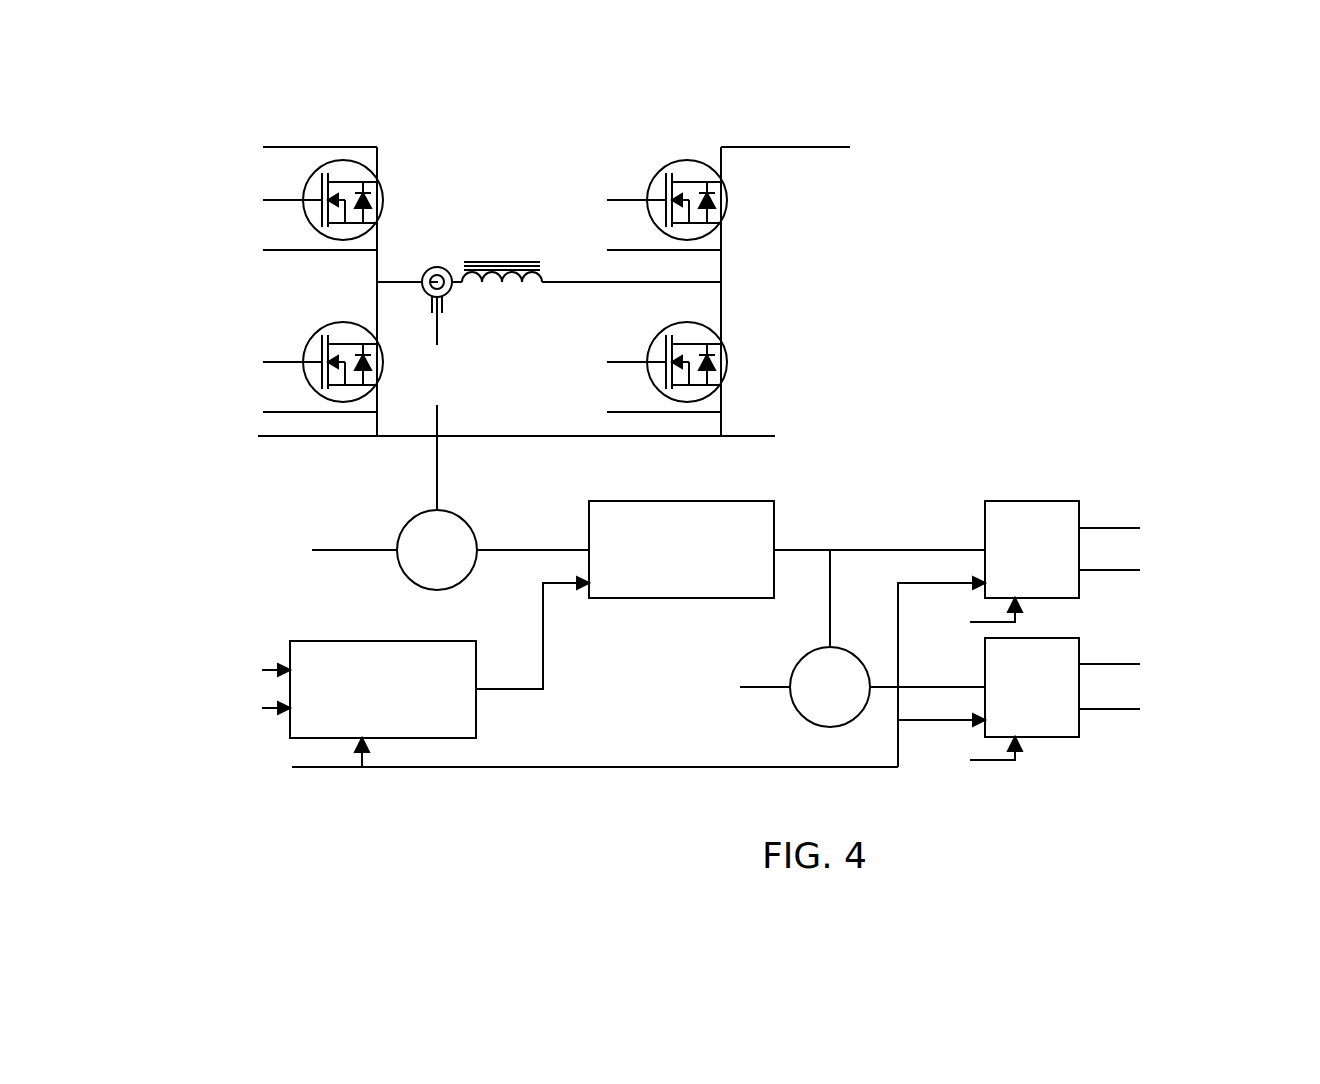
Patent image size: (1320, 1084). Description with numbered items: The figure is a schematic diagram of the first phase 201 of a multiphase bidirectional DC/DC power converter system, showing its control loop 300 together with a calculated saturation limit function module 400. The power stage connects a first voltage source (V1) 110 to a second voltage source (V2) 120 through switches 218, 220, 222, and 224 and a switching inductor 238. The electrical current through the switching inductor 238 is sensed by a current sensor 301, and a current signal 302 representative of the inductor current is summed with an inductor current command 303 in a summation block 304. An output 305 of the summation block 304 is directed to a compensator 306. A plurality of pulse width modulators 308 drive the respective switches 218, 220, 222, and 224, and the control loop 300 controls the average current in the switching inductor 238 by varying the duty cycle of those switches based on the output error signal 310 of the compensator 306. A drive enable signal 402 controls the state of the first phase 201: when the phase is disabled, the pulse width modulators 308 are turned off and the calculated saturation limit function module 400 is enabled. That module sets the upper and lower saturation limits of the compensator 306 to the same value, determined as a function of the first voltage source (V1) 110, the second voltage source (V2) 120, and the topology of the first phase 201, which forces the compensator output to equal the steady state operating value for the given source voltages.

The first voltage source (V1) 110 is at (303, 147).
The second voltage source (V2) 120 is at (785, 147).
The first phase 201 is at (890, 250).
The switch 218 is at (302, 213).
The switch 220 is at (310, 336).
The switch 222 is at (727, 203).
The switch 224 is at (727, 362).
The switching inductor 238 is at (517, 285).
The control loop 300 is at (1030, 420).
The current sensor 301 is at (437, 267).
The current signal 302 is at (437, 452).
The inductor current command 303 is at (325, 550).
The summation block 304 is at (437, 590).
The output of summation block 305 is at (500, 550).
The compensator 306 is at (643, 501).
The pulse width modulators (PWMs) 308 is at (1040, 501).
The output error signal 310 is at (893, 550).
The calculated saturation limit function module 400 is at (476, 710).
The drive enable signal 402 is at (327, 767).